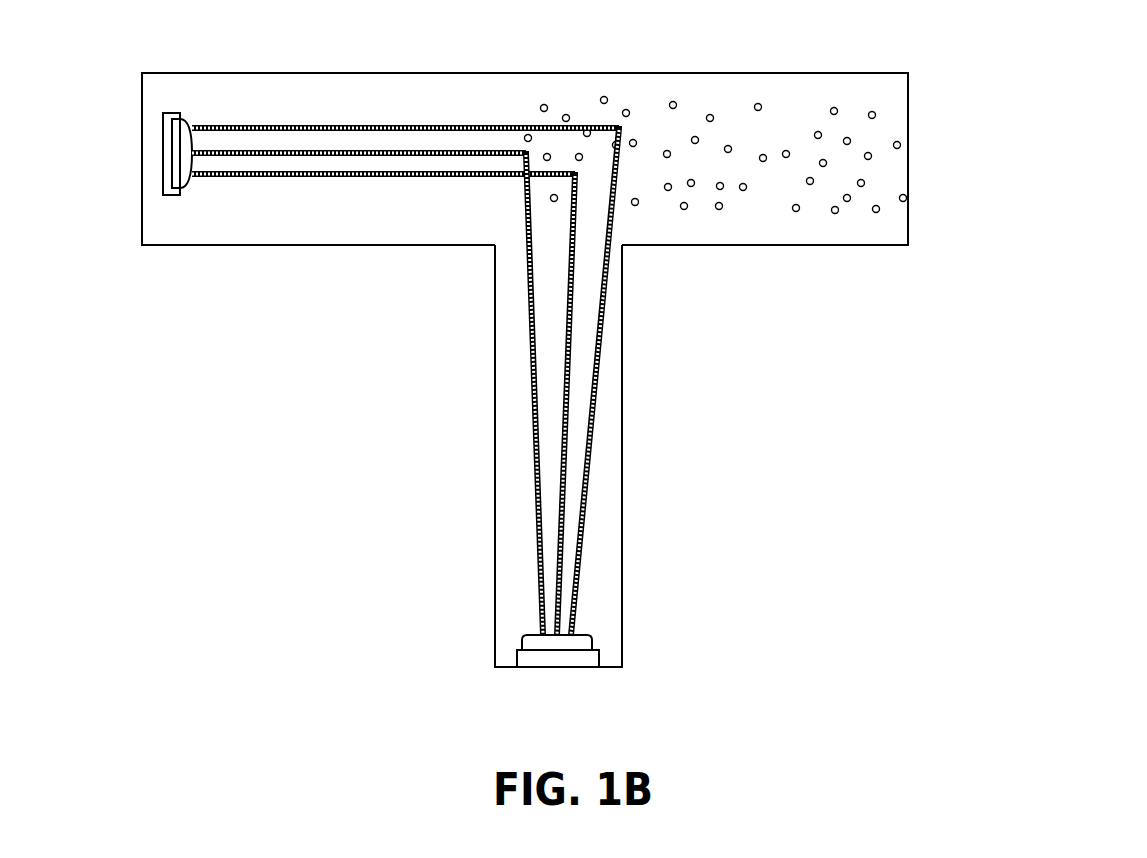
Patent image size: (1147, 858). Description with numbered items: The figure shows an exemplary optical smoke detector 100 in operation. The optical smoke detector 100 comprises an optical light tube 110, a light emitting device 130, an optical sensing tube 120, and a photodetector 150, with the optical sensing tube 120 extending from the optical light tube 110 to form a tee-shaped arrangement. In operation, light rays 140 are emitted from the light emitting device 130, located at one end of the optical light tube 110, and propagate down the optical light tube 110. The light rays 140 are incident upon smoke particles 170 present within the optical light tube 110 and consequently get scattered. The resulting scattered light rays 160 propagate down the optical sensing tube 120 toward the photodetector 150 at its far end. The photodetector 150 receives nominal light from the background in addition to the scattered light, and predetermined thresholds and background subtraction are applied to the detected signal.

The optical smoke detector 100 is at (526, 358).
The optical light tube 110 is at (563, 125).
The optical sensing tube 120 is at (627, 441).
The light emitting device 130 is at (163, 178).
The light rays 140 is at (405, 317).
The photodetector 150 is at (581, 669).
The scattered light rays 160 is at (561, 412).
The smoke particles 170 is at (672, 158).